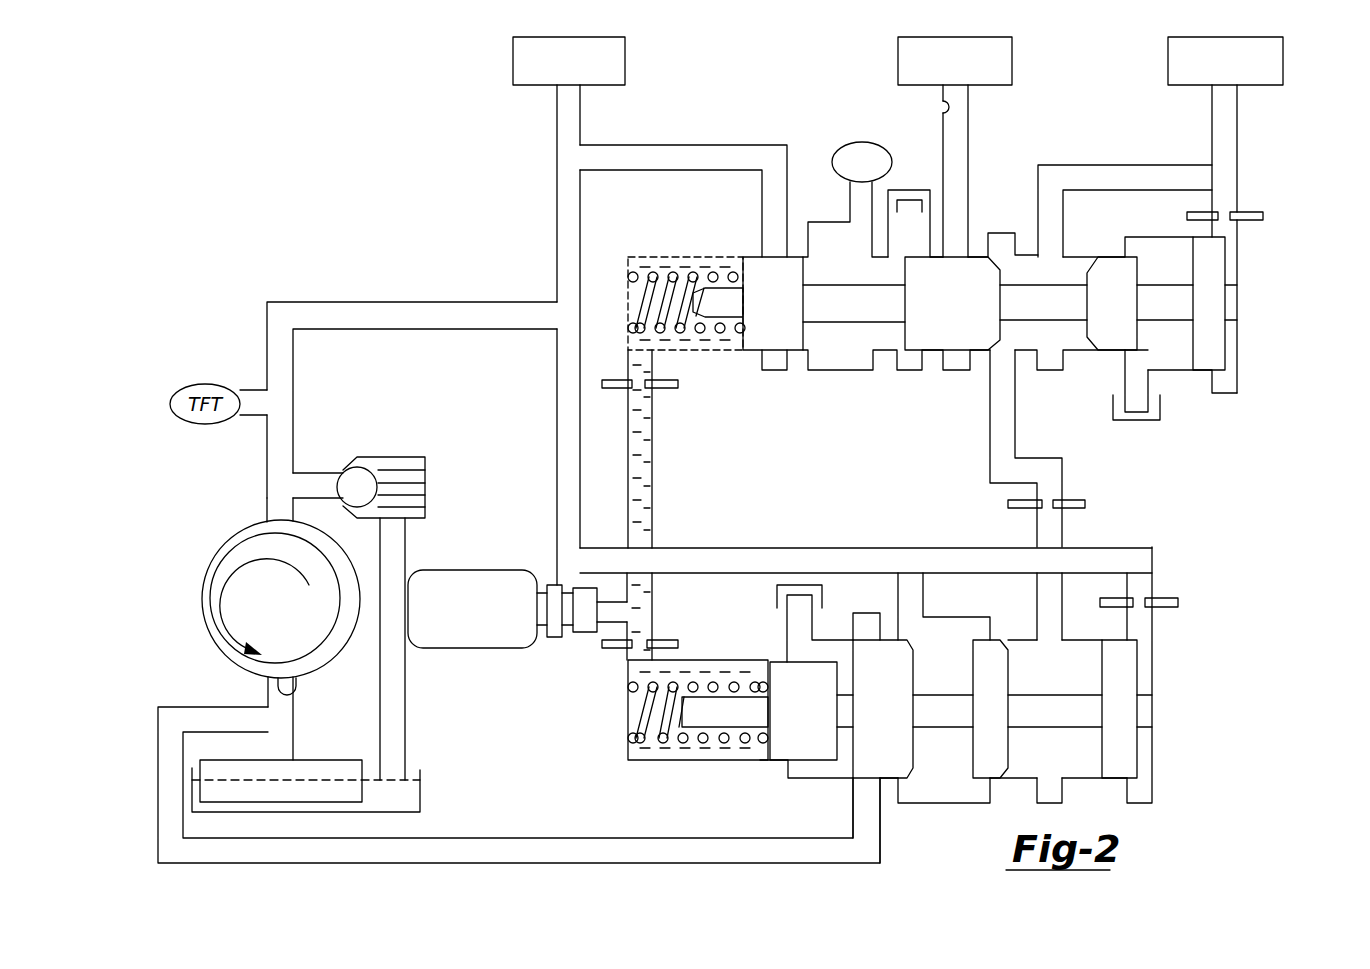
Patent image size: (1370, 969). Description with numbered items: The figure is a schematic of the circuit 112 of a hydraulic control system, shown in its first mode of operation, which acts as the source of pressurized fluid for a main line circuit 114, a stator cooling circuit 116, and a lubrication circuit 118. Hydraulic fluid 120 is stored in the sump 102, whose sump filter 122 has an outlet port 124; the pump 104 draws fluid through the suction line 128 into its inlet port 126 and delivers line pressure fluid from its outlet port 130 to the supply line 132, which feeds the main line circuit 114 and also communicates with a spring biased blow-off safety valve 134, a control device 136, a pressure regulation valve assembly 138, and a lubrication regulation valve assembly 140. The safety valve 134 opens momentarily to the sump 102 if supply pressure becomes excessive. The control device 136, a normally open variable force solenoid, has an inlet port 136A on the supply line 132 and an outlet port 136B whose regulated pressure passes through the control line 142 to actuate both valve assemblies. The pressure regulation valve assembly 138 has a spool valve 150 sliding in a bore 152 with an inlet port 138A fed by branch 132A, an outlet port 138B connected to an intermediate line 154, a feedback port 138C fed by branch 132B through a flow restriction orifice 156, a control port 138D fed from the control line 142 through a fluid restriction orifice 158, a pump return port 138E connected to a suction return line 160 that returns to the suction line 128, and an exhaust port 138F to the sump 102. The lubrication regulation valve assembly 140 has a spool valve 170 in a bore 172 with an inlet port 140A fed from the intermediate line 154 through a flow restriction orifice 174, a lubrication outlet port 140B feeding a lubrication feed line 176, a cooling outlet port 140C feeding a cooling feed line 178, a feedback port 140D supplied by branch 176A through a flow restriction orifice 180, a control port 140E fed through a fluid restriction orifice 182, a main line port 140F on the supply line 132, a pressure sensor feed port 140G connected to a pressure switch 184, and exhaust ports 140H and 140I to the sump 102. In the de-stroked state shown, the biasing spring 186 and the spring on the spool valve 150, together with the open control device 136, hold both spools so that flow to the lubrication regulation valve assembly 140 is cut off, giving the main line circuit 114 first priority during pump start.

The sump 102 is at (420, 790).
The pump 104 is at (213, 560).
The circuit 112 is at (1272, 132).
The main line circuit 114 is at (556, 76).
The stator cooling circuit 116 is at (942, 76).
The lubrication circuit 118 is at (1213, 76).
The hydraulic fluid 120 is at (417, 770).
The sump filter 122 is at (327, 802).
The outlet port 124 is at (283, 763).
The inlet port 126 is at (300, 689).
The suction line 128 is at (290, 700).
The outlet port 130 is at (268, 520).
The supply line 132 is at (380, 300).
The branch 132A is at (924, 608).
The branch 132B is at (1154, 633).
The spring biased blow-off safety valve 134 is at (397, 456).
The control device 136 is at (470, 570).
The inlet port 136A is at (556, 583).
The outlet port 136B is at (605, 608).
The pressure regulation valve assembly 138 is at (942, 678).
The inlet port 138A is at (903, 617).
The outlet port 138B is at (1047, 640).
The feedback port 138C is at (1135, 600).
The control port 138D is at (638, 655).
The pump return port 138E is at (868, 790).
The exhaust port 138F is at (797, 637).
The lubrication regulation valve assembly 140 is at (913, 316).
The inlet port 140A is at (1000, 352).
The lubrication outlet port 140B is at (1052, 267).
The cooling outlet port 140C is at (958, 250).
The feedback port 140D is at (1218, 237).
The control port 140E is at (628, 337).
The main line port 140F is at (775, 248).
The pressure sensor feed port 140G is at (858, 222).
The exhaust port 140H is at (903, 262).
The exhaust port 140I is at (1135, 363).
The control line 142 is at (630, 482).
The spool valve 150 is at (1078, 717).
The bore 152 is at (1018, 777).
The intermediate line 154 is at (1016, 422).
The flow restriction orifice 156 is at (1165, 583).
The fluid restriction orifice 158 is at (668, 640).
The suction return line 160 is at (548, 855).
The spool valve 170 is at (860, 315).
The bore 172 is at (826, 370).
The flow restriction orifice 174 is at (1068, 497).
The lubrication feed line 176 is at (1077, 165).
The branch 176A is at (1240, 196).
The cooling feed line 178 is at (940, 112).
The flow restriction orifice 180 is at (1248, 222).
The fluid restriction orifice 182 is at (662, 390).
The pressure switch 184 is at (862, 141).
The spring 186 is at (632, 280).